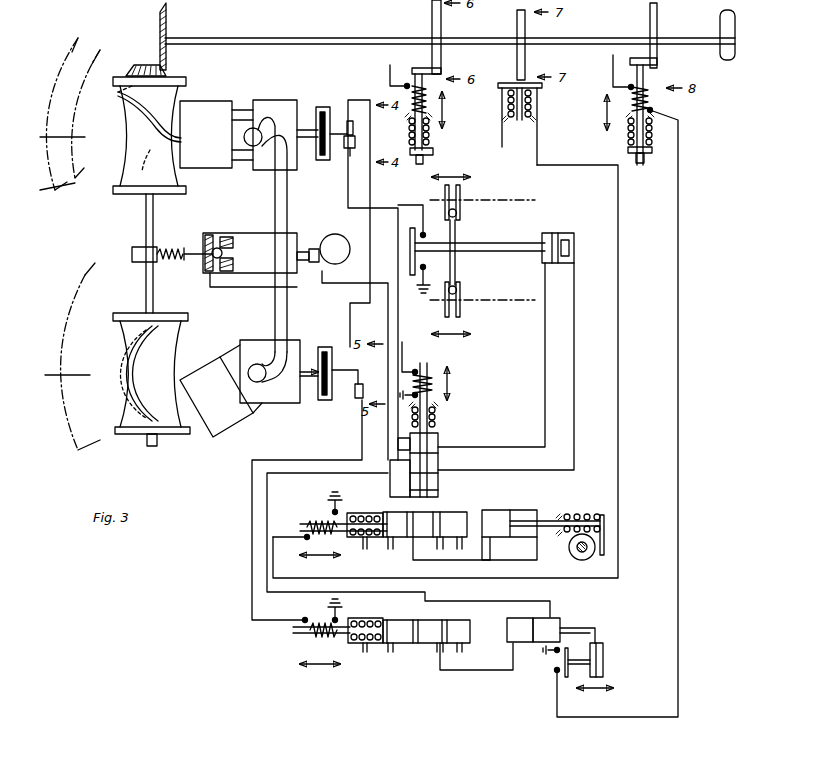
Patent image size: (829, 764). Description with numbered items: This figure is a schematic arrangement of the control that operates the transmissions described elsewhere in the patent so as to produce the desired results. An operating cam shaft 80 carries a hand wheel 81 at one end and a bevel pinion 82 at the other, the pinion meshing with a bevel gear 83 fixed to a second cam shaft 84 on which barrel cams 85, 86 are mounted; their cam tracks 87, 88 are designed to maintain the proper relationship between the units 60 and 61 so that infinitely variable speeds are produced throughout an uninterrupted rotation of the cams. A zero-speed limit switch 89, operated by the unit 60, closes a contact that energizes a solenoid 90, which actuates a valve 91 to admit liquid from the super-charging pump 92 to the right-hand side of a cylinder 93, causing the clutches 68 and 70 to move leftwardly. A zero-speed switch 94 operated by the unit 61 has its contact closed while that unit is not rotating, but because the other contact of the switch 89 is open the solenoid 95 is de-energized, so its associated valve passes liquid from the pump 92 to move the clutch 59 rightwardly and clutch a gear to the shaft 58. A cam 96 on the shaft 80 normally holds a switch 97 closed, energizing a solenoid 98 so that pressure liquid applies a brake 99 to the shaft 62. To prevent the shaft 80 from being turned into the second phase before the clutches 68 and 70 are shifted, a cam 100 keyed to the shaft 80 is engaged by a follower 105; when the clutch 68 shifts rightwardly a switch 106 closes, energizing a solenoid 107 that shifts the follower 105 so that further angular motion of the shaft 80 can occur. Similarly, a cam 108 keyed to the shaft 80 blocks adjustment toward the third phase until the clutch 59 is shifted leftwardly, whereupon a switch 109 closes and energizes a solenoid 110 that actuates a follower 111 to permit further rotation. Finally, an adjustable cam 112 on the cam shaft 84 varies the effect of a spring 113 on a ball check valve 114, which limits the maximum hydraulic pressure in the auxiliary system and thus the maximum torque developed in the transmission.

The operating cam shaft 80 is at (328, 38).
The hand wheel 81 is at (736, 33).
The bevel pinion 82 is at (168, 16).
The bevel gear 83 is at (130, 66).
The cam shaft 84 is at (146, 232).
The barrel cam 85 is at (120, 160).
The barrel cam 86 is at (120, 407).
The cam track 87 is at (118, 93).
The cam track 88 is at (182, 331).
The zero-speed limit switch 89 is at (320, 108).
The solenoid 90 is at (428, 362).
The valve 91 is at (440, 447).
The super-charging pump 92 is at (323, 244).
The cylinder 93 is at (576, 247).
The zero-speed switch 94 is at (321, 346).
The solenoid 95 is at (312, 632).
The cam 96 is at (517, 28).
The switch 97 is at (541, 86).
The solenoid 98 is at (310, 521).
The brake 99 is at (595, 560).
The cam 100 is at (441, 14).
The follower 105 is at (414, 70).
The switch 106 is at (410, 247).
The solenoid 107 is at (405, 86).
The cam 108 is at (650, 20).
The switch 109 is at (554, 664).
The solenoid 110 is at (646, 92).
The follower 111 is at (657, 62).
The adjustable cam 112 is at (132, 254).
The spring 113 is at (178, 247).
The ball check valve 114 is at (231, 262).
The shaft 58 is at (316, 150).
The clutch 59 is at (604, 666).
The unit 60 is at (204, 132).
The unit 61 is at (220, 406).
The shaft 62 is at (318, 380).
The clutch 68 is at (463, 208).
The clutch 70 is at (463, 297).